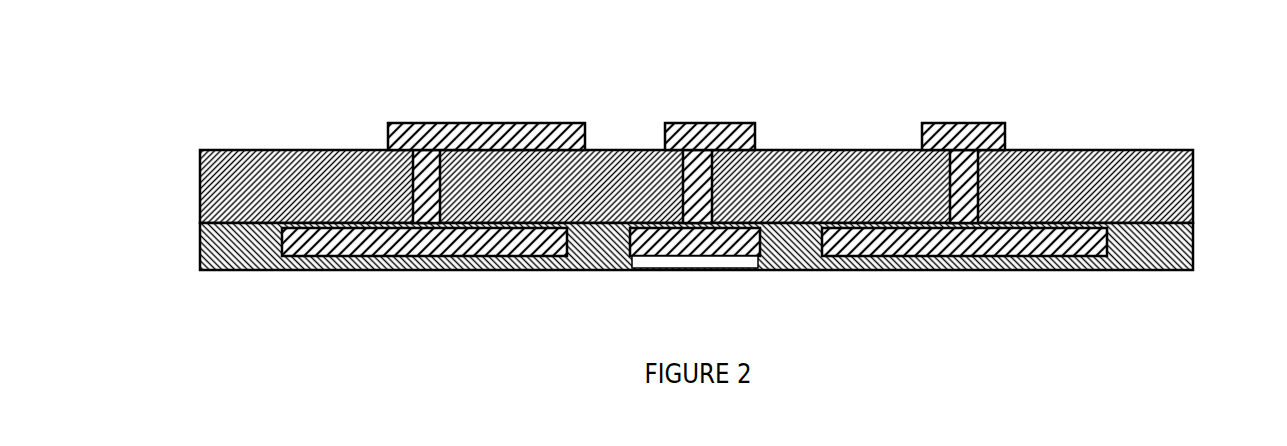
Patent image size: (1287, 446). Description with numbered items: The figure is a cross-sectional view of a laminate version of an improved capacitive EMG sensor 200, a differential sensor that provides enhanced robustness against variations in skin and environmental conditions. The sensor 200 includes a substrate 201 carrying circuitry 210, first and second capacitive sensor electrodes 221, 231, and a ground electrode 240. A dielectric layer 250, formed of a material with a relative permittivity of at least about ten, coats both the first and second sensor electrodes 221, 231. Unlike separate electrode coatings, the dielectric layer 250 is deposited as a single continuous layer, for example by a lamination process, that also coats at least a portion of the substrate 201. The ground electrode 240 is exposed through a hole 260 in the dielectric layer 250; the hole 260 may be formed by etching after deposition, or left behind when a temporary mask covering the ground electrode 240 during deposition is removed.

The capacitive EMG sensor 200 is at (673, 186).
The substrate 201 is at (821, 201).
The circuitry 210 is at (380, 107).
The first capacitive sensor electrode 221 is at (488, 253).
The second capacitive sensor electrode 231 is at (879, 253).
The ground electrode 240 is at (682, 253).
The dielectric layer 250 is at (220, 255).
The hole 260 is at (747, 266).